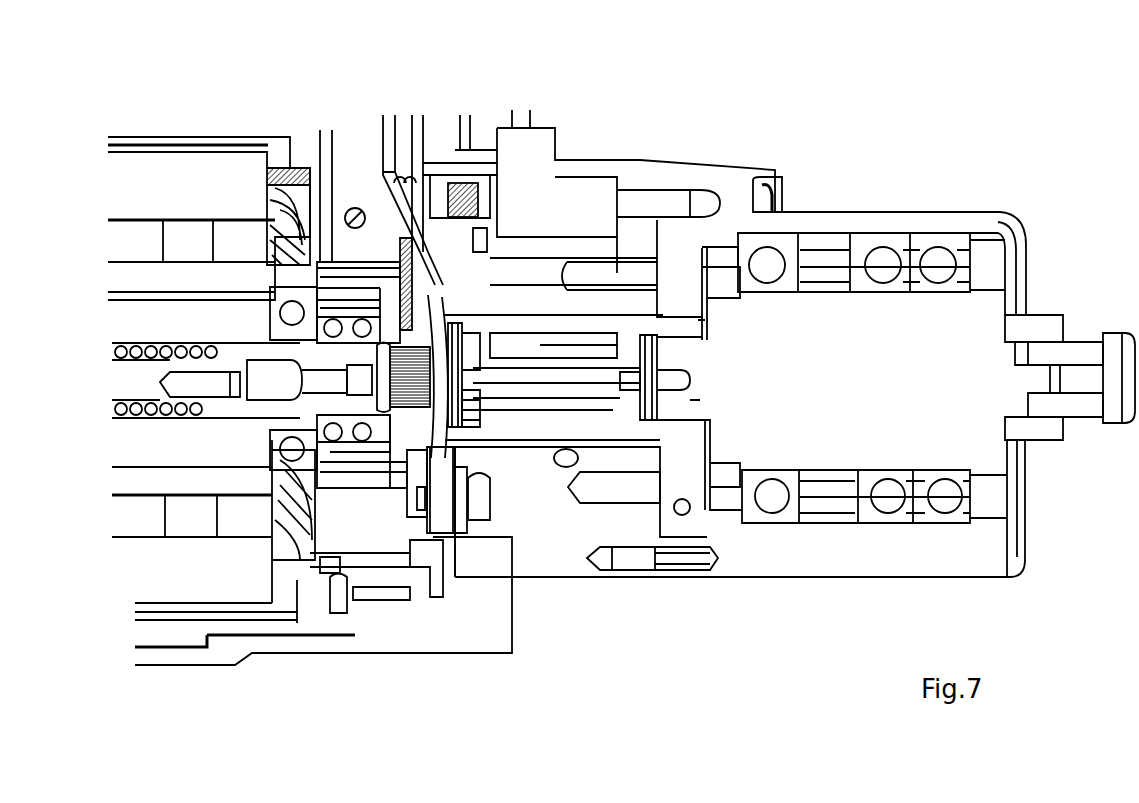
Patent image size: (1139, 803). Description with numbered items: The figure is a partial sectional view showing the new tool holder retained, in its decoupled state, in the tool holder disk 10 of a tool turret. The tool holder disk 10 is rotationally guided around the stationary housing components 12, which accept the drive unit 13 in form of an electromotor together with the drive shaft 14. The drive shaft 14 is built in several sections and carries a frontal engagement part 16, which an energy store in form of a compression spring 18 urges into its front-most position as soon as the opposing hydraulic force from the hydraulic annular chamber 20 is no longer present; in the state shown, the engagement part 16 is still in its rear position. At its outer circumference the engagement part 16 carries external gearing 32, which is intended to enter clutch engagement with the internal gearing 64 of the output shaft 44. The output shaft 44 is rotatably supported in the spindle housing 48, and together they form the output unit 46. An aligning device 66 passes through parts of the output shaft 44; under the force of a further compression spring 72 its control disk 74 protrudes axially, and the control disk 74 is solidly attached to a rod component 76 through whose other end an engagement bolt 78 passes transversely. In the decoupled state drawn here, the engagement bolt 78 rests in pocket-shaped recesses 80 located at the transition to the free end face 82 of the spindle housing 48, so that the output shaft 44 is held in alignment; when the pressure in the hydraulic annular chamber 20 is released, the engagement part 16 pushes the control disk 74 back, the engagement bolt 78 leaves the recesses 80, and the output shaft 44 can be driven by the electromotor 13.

The tool holder disk 10 is at (682, 167).
The stationary housing components 12 is at (350, 152).
The drive unit 13 is at (183, 245).
The drive shaft 14 is at (167, 327).
The frontal engagement part 16 is at (400, 420).
The compression spring 18 is at (160, 418).
The hydraulic annular chamber 20 is at (362, 285).
The external gearing 32 is at (462, 320).
The output shaft 44 is at (815, 364).
The output unit 46 is at (838, 552).
The spindle housing 48 is at (840, 223).
The internal gearing 64 is at (488, 332).
The aligning device 66 is at (560, 376).
The compression spring 72 is at (515, 348).
The control disk 74 is at (494, 440).
The rod component 76 is at (590, 348).
The engagement bolt 78 is at (680, 400).
The pocket-shaped recesses 80 is at (703, 322).
The free end face 82 is at (673, 242).